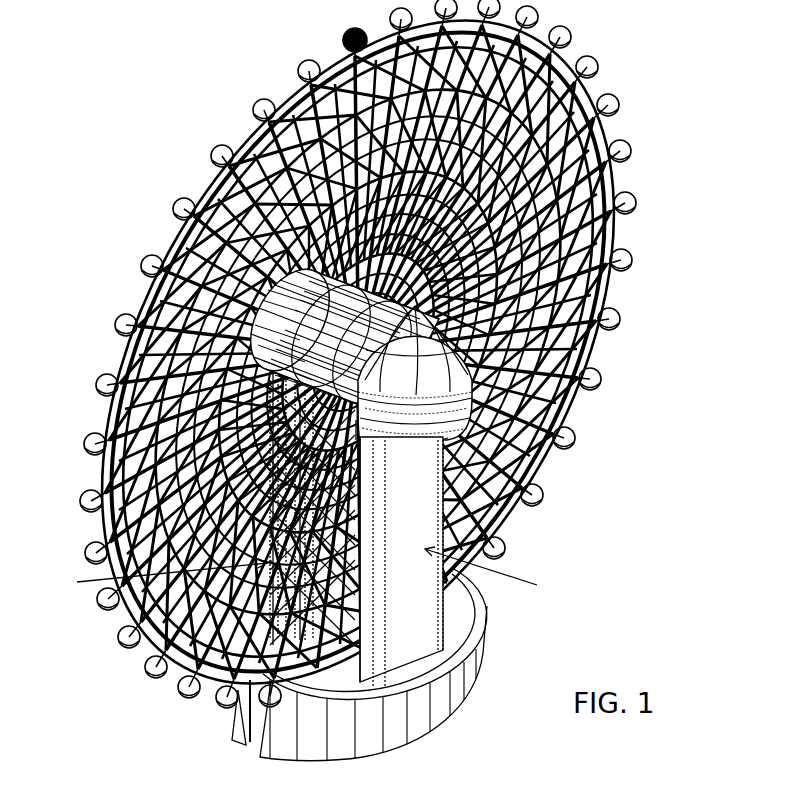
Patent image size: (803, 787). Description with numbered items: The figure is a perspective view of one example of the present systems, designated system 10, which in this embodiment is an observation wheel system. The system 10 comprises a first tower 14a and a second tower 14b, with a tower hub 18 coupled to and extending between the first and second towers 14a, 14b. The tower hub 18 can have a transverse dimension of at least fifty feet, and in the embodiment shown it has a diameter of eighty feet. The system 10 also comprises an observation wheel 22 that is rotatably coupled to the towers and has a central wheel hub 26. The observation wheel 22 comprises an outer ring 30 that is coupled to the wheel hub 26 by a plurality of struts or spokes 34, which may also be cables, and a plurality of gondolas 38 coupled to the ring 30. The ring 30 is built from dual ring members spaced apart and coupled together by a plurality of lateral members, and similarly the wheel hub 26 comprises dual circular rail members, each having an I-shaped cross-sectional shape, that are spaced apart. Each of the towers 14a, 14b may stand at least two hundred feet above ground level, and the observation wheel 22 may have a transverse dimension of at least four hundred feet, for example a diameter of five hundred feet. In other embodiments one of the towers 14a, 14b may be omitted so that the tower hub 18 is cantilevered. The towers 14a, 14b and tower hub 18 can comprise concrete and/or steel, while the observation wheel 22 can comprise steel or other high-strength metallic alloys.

The system 10 is at (99, 161).
The first tower 14a is at (503, 571).
The second tower 14b is at (148, 577).
The tower hub 18 is at (472, 380).
The observation wheel 22 is at (154, 235).
The wheel hub 26 is at (480, 312).
The outer ring 30 is at (612, 128).
The struts or spokes 34 is at (150, 325).
The gondolas 38 is at (597, 53).